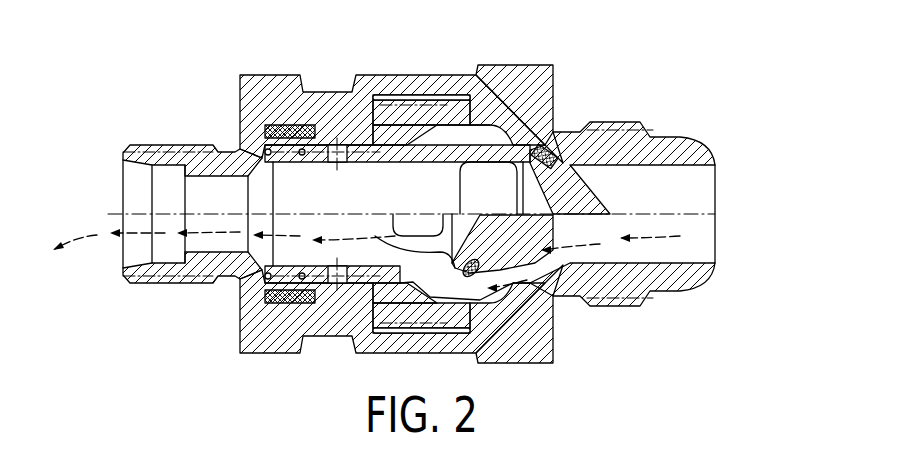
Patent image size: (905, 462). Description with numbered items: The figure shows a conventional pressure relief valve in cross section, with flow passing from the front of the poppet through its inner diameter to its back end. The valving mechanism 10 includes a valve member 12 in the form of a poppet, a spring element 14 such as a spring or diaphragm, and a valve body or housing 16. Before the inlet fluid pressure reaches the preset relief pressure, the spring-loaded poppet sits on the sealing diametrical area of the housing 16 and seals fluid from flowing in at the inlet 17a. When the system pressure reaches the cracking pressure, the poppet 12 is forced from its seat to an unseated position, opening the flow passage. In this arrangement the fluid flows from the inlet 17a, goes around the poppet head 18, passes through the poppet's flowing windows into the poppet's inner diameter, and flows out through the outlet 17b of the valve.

The valving mechanism 10 is at (181, 90).
The valve member 12 is at (573, 184).
The spring element 14 is at (370, 122).
The valve body or housing 16 is at (543, 82).
The inlet 17a is at (717, 226).
The outlet 17b is at (120, 252).
The poppet head 18 is at (503, 233).